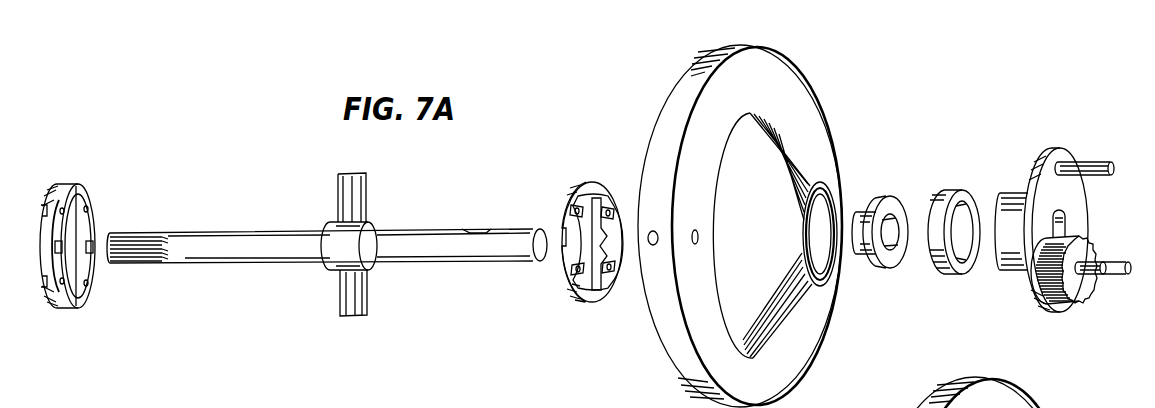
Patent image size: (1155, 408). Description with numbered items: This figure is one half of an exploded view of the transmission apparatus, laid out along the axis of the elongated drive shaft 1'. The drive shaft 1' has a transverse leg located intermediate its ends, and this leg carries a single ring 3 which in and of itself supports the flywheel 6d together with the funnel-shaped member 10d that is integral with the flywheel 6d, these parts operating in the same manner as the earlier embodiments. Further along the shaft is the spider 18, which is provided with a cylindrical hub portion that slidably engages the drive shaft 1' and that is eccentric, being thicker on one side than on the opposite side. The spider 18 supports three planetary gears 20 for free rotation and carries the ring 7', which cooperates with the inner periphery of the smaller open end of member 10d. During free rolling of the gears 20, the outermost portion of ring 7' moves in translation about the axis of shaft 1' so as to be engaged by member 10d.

The ring 3 is at (78, 193).
The elongated drive shaft 1' is at (327, 235).
The flywheel 6d is at (680, 82).
The funnel-shaped member 10d is at (772, 148).
The ring 7' is at (954, 214).
The spider 18 is at (1033, 172).
The planetary gears 20 is at (1082, 298).